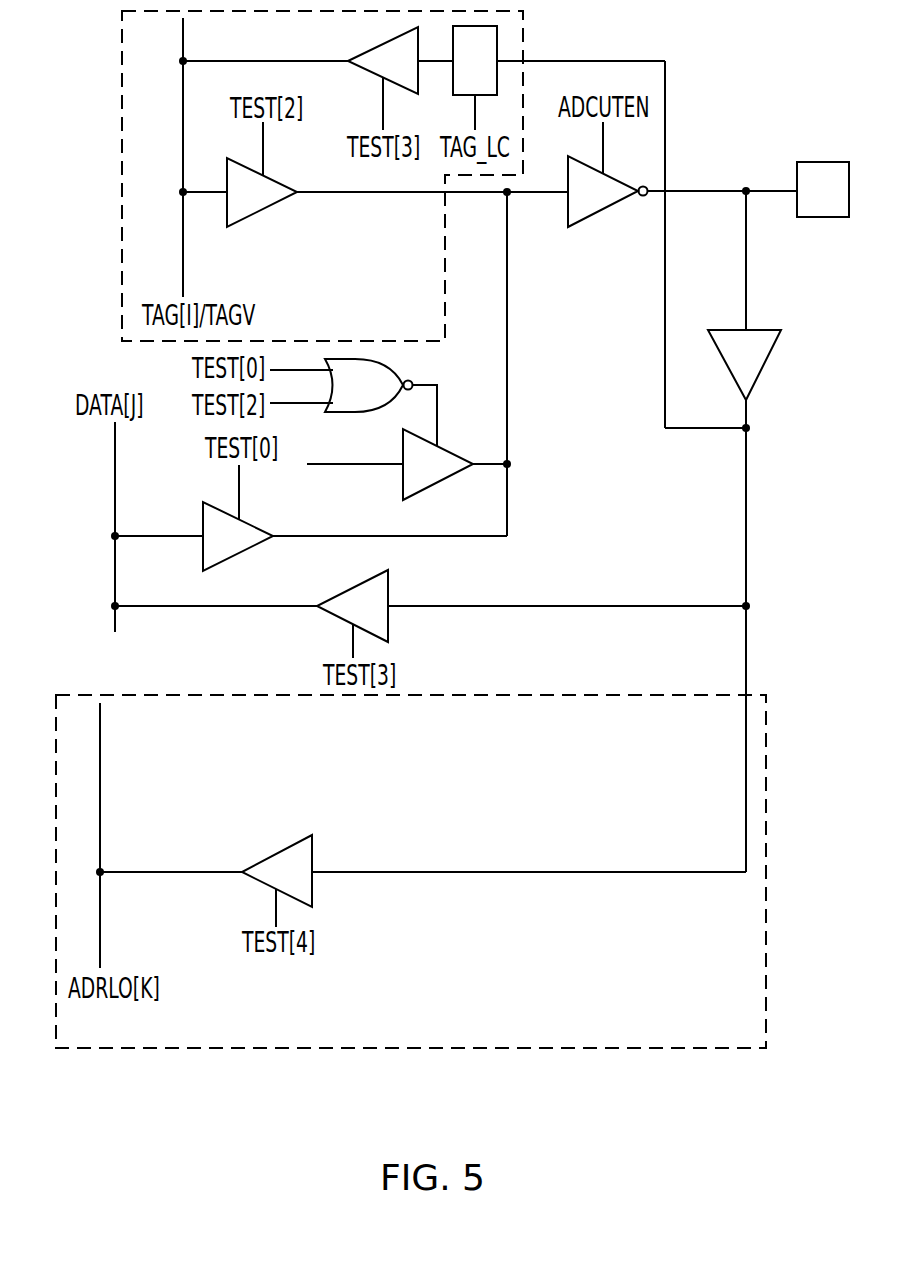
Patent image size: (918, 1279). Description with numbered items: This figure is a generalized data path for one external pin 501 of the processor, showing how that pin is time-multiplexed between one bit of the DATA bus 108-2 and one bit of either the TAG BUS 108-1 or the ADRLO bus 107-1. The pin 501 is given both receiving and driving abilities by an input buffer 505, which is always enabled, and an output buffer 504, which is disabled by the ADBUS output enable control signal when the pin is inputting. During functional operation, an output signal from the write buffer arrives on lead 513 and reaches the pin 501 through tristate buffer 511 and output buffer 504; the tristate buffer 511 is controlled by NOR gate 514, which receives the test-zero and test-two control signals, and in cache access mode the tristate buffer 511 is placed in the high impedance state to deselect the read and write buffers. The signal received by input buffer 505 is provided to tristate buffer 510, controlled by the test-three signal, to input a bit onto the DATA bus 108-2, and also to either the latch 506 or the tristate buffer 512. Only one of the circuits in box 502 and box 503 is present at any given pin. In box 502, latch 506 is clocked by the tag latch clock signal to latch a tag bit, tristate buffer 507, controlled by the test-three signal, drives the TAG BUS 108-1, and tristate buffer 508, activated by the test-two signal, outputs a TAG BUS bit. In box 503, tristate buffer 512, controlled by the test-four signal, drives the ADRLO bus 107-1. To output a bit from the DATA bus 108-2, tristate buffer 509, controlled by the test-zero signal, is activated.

The external pin 501 is at (838, 162).
The box 502 is at (525, 33).
The box 503 is at (768, 776).
The output buffer 504 is at (600, 210).
The input buffer 505 is at (767, 358).
The latch 506 is at (456, 95).
The tristate buffer 507 is at (386, 44).
The tristate buffer 508 is at (267, 210).
The tristate buffer 509 is at (250, 522).
The tristate buffer 510 is at (390, 580).
The tristate buffer 511 is at (436, 484).
The tristate buffer 512 is at (314, 843).
The lead 513 is at (357, 466).
The NOR gate 514 is at (345, 414).
The TAG BUS 108-1 is at (185, 262).
The DATA bus 108-2 is at (114, 470).
The ADRLO bus 107-1 is at (102, 926).